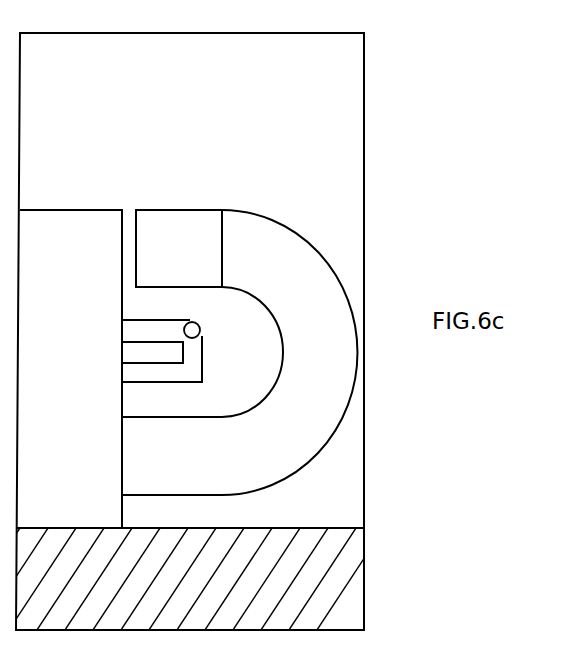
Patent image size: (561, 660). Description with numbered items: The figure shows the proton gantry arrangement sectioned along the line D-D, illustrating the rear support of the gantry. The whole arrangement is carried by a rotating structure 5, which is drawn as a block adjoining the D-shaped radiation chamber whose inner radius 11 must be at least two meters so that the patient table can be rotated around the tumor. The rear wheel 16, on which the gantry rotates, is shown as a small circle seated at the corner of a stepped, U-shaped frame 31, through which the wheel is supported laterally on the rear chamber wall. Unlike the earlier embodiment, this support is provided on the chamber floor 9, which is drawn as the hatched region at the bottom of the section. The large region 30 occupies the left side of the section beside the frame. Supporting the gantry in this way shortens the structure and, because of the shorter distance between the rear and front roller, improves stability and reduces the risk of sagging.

The rotating structure 5 is at (180, 221).
The chamber floor 9 is at (302, 523).
The inner radius 11 is at (282, 347).
The rear wheel 16 is at (200, 327).
The housing region 30 is at (78, 369).
The U-shaped frame 31 is at (156, 372).